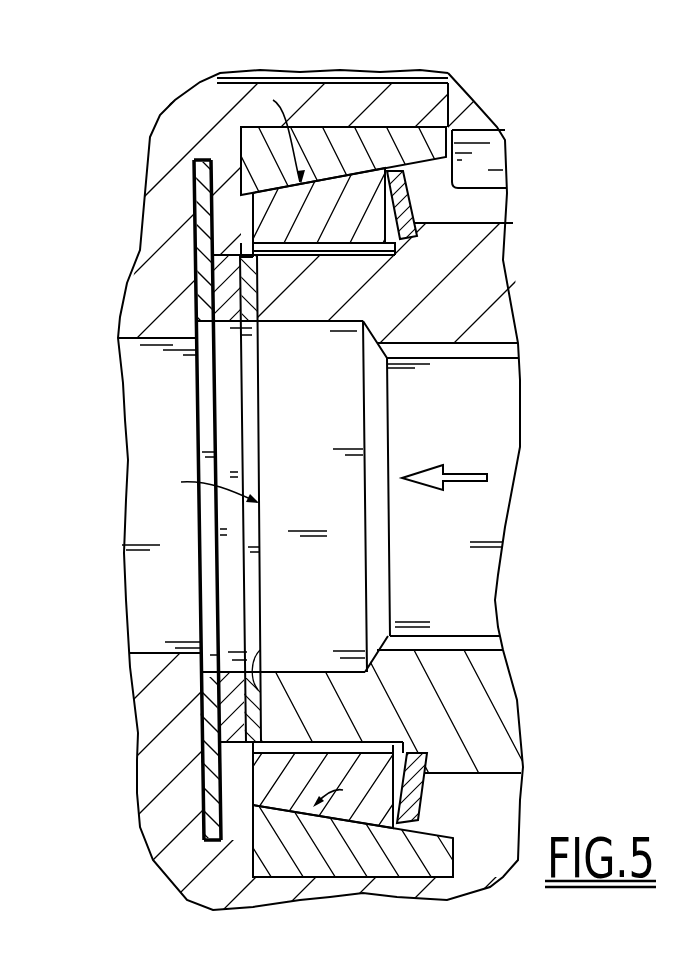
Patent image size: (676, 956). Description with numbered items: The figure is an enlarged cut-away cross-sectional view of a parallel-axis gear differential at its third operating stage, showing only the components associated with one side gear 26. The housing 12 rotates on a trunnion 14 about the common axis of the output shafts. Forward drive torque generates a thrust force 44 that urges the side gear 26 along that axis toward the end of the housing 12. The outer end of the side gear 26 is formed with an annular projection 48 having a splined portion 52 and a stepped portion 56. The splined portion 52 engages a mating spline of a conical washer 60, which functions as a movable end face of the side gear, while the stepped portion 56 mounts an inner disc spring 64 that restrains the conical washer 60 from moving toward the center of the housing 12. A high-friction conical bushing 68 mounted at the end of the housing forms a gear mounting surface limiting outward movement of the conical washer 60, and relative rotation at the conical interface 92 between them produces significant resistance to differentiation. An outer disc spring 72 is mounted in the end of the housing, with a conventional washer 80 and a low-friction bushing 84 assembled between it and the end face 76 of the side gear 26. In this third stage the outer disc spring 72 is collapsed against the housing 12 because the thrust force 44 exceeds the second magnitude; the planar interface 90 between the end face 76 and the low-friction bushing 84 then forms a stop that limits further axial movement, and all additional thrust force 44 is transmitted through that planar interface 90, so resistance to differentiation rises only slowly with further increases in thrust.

The housing 12 is at (232, 897).
The trunnion 14 is at (133, 329).
The side gear 26 is at (510, 313).
The thrust force 44 is at (469, 482).
The annular projection 48 is at (328, 672).
The splined portion 52 is at (352, 246).
The stepped portion 56 is at (410, 246).
The conical washer 60 is at (336, 254).
The inner disc spring 64 is at (411, 200).
The conical bushing 68 is at (352, 150).
The outer disc spring 72 is at (203, 250).
The end face 76 is at (256, 668).
The conventional washer 80 is at (228, 327).
The low-friction bushing 84 is at (250, 328).
The planar interface 90 is at (203, 485).
The conical interface 92 is at (311, 449).